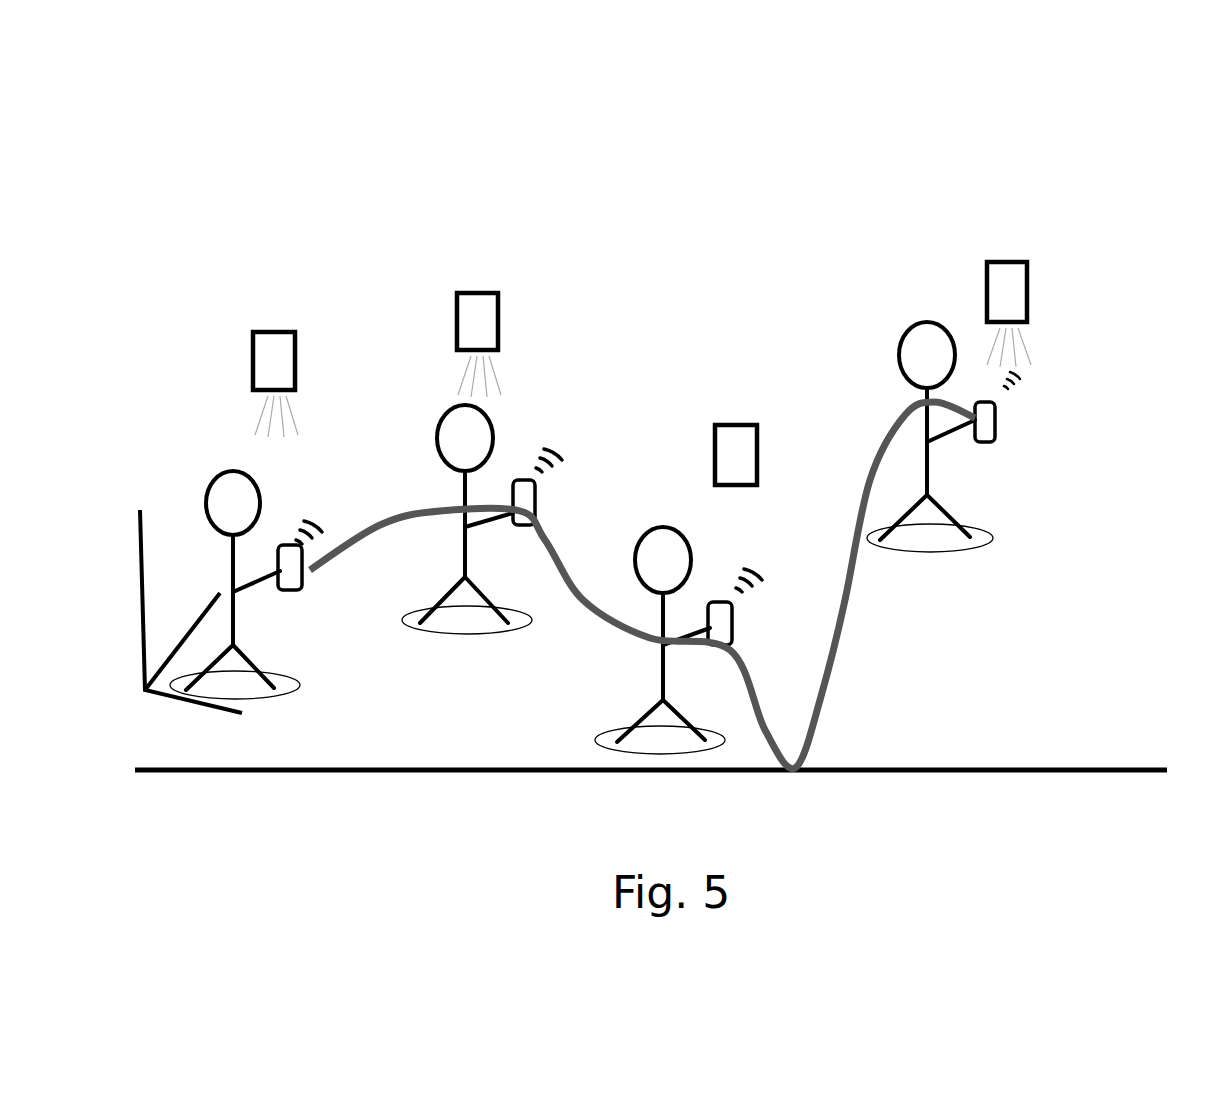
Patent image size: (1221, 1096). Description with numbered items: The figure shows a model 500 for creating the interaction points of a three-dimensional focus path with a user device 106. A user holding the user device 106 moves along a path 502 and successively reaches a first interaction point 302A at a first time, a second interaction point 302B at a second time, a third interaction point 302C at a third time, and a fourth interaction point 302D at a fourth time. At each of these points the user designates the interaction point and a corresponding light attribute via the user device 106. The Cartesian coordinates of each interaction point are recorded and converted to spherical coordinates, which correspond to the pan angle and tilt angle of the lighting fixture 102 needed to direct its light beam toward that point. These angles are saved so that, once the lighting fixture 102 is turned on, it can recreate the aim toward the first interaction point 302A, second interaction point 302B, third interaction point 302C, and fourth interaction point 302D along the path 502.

The model 500 is at (238, 107).
The lighting fixture 102 is at (275, 332).
The user device 106 is at (300, 592).
The first interaction point 302A is at (250, 686).
The second interaction point 302B is at (477, 620).
The third interaction point 302C is at (673, 740).
The fourth interaction point 302D is at (940, 535).
The path 502 is at (851, 620).